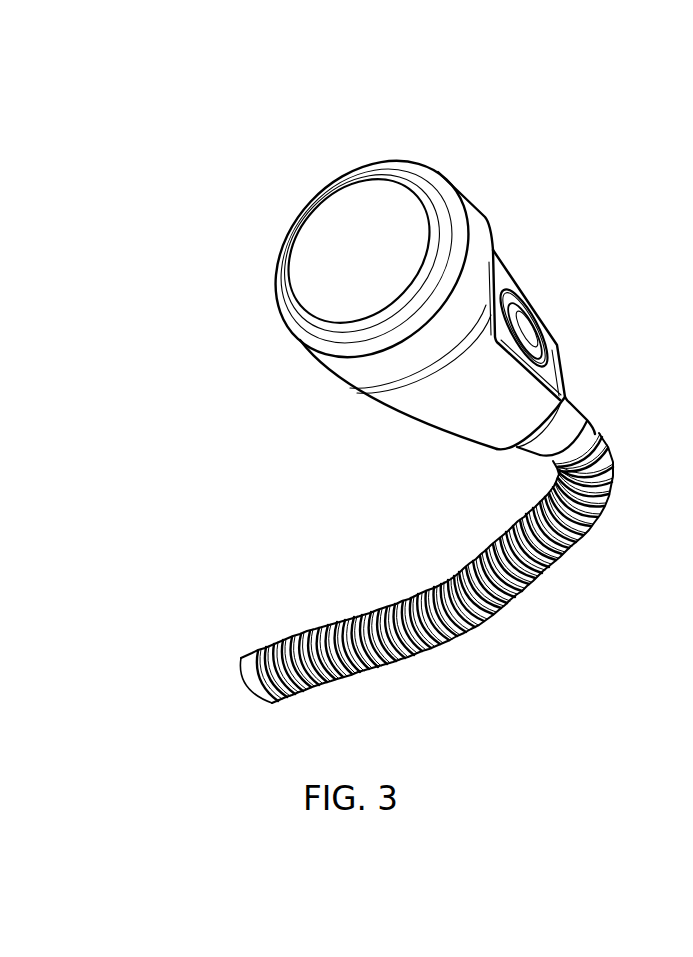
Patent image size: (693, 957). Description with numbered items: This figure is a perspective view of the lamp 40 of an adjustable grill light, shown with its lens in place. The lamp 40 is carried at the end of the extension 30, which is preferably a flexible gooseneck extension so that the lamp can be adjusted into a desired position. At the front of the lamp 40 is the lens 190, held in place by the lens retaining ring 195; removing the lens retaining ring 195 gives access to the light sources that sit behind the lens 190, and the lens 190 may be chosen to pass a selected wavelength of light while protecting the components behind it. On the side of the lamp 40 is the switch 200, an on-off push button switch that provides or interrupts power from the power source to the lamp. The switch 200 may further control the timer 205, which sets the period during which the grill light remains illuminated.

The extension 30 is at (450, 630).
The lamp 40 is at (449, 395).
The lens 190 is at (362, 245).
The lens retaining ring 195 is at (358, 343).
The switch 200 is at (529, 328).
The timer 205 is at (535, 337).